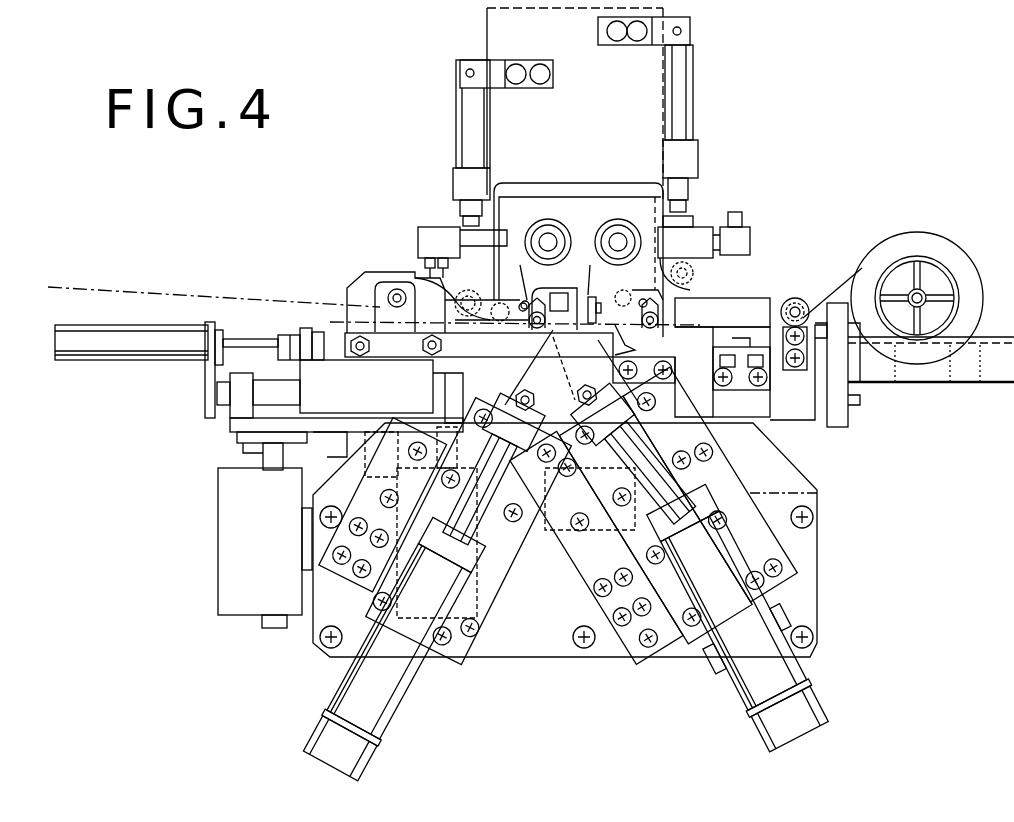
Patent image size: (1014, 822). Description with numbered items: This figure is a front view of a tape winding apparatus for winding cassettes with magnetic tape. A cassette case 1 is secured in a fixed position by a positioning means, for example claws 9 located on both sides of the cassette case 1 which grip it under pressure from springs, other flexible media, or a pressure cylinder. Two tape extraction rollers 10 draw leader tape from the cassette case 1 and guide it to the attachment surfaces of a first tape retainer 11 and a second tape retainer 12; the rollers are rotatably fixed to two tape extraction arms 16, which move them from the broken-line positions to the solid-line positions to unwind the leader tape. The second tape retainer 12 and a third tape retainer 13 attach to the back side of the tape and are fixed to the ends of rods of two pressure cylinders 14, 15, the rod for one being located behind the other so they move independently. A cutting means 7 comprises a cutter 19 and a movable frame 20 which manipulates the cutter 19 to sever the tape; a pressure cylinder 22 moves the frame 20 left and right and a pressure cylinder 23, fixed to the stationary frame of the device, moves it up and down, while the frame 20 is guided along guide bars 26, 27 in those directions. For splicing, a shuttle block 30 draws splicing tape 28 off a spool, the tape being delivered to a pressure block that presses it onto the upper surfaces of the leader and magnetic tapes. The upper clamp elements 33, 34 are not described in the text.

The cassette case 1 is at (533, 200).
The cutting means 7 is at (340, 296).
The claws 9 is at (462, 227).
The tape extraction rollers 10 is at (650, 218).
The first tape retainer 11 is at (633, 343).
The second tape retainer 12 is at (548, 300).
The third tape retainer 13 is at (562, 350).
The pressure cylinder 14 is at (754, 698).
The pressure cylinder 15 is at (393, 700).
The tape extraction arms 16 is at (445, 290).
The cutter 19 is at (591, 290).
The movable frame 20 is at (488, 353).
The pressure cylinder 22 is at (148, 362).
The pressure cylinder 23 is at (300, 568).
The guide bar 26 is at (265, 393).
The guide bar 27 is at (268, 460).
The splicing tape 28 is at (852, 278).
The shuttle block 30 is at (784, 300).
The right clamp cylinder 33 is at (693, 70).
The left clamp cylinder 34 is at (462, 94).